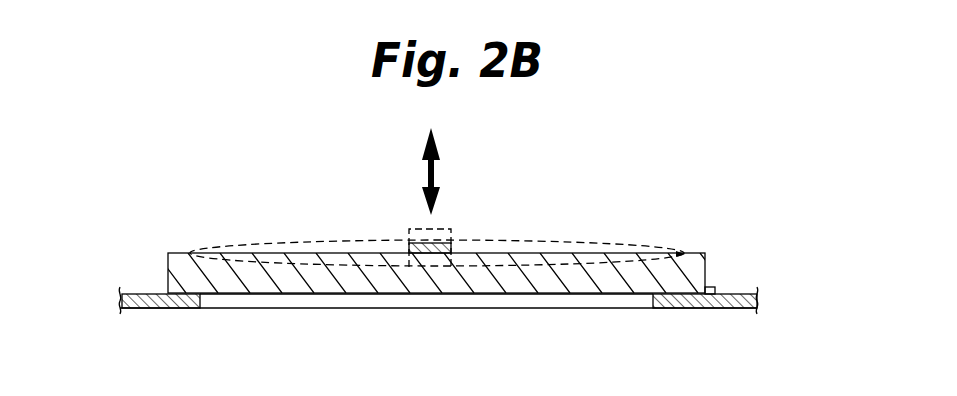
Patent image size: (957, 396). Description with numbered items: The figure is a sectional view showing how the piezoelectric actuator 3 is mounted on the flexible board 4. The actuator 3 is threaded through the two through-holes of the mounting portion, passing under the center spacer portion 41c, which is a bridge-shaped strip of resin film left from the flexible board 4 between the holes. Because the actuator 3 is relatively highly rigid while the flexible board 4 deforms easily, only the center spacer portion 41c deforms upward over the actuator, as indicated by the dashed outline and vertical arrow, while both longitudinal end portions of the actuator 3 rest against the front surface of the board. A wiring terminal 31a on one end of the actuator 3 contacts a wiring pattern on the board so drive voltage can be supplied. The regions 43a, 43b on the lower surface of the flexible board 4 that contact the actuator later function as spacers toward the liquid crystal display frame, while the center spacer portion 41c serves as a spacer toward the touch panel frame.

The piezoelectric actuator 3 is at (193, 253).
The flexible board 4 is at (512, 310).
The wiring terminal 31a is at (717, 287).
The center spacer portion 41c is at (398, 237).
The region 43a is at (168, 315).
The region 43b is at (707, 315).